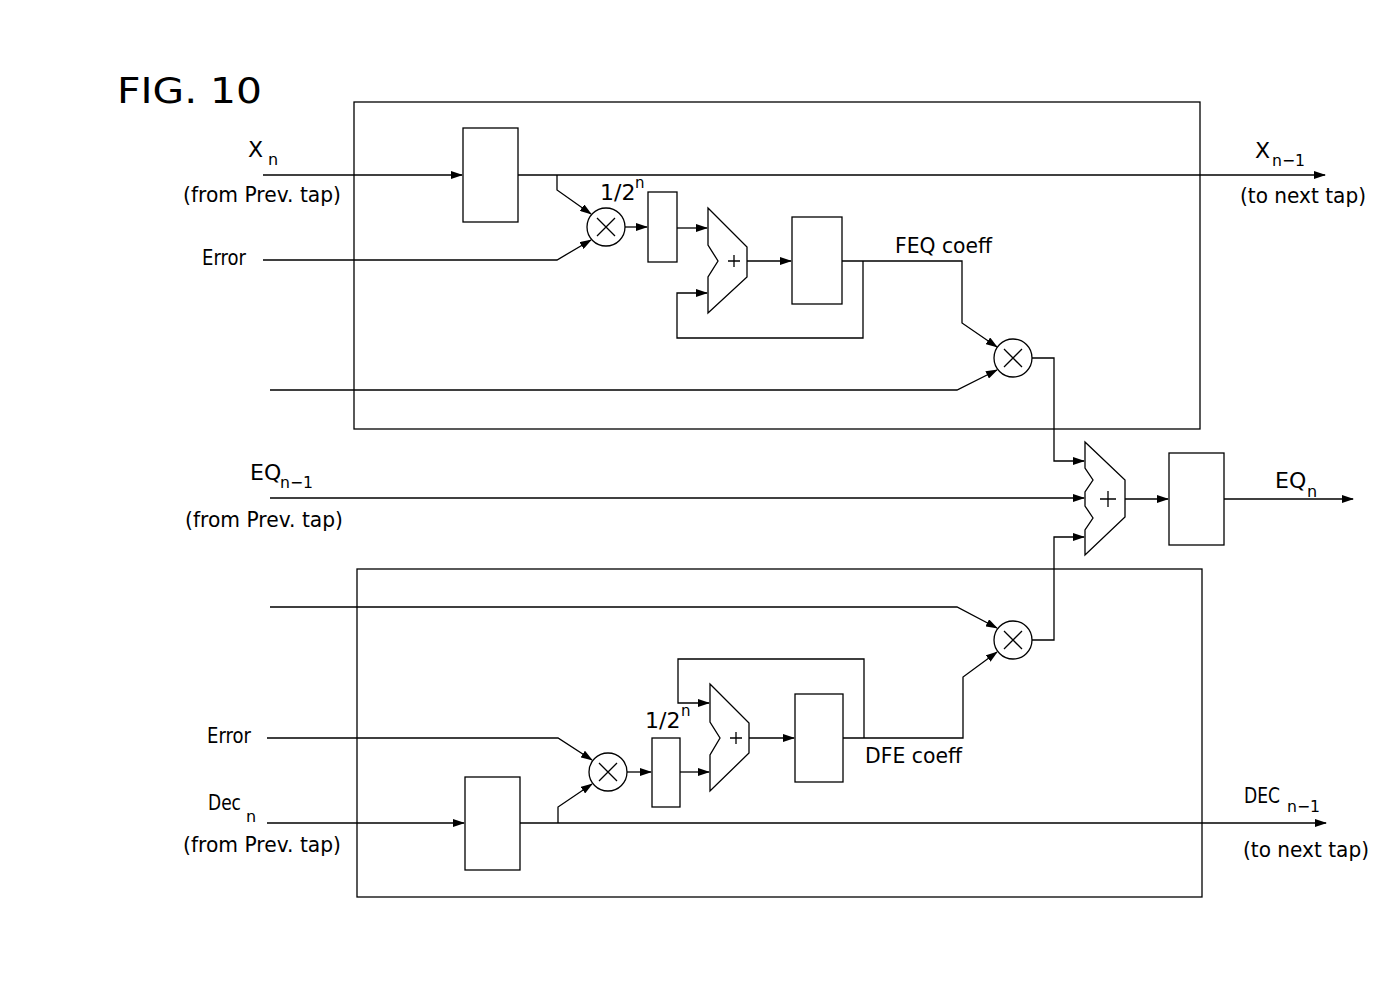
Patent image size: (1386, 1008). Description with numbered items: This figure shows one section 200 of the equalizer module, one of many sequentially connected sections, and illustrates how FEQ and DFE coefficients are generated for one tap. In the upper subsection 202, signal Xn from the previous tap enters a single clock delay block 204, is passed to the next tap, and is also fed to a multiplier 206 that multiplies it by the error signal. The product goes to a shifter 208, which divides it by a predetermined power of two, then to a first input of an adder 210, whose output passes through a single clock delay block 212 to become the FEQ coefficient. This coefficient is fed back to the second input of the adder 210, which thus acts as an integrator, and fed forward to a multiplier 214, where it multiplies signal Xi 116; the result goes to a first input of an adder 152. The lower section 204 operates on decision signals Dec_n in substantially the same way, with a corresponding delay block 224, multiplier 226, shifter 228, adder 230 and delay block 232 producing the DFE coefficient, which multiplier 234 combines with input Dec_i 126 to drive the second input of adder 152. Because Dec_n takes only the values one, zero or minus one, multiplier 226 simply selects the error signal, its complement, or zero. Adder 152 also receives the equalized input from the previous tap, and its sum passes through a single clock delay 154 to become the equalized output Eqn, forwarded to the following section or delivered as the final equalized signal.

The section 200 is at (1314, 108).
The subsection 202 is at (1118, 102).
The single clock delay block 204 is at (517, 142).
The multiplier 206 is at (610, 247).
The shifter 208 is at (663, 262).
The adder 210 is at (722, 217).
The single clock delay block 212 is at (827, 217).
The multiplier 214 is at (1018, 337).
The input sample Xi 116 is at (332, 393).
The decision input Dec i 126 is at (333, 613).
The adder 152 is at (1100, 462).
The single clock delay 154 is at (1210, 453).
The delay element 224 is at (520, 855).
The multiplier 226 is at (617, 752).
The scaling block 1/2^n 228 is at (678, 807).
The adder 230 is at (720, 778).
The delay element 232 is at (828, 782).
The multiplier 234 is at (1018, 658).